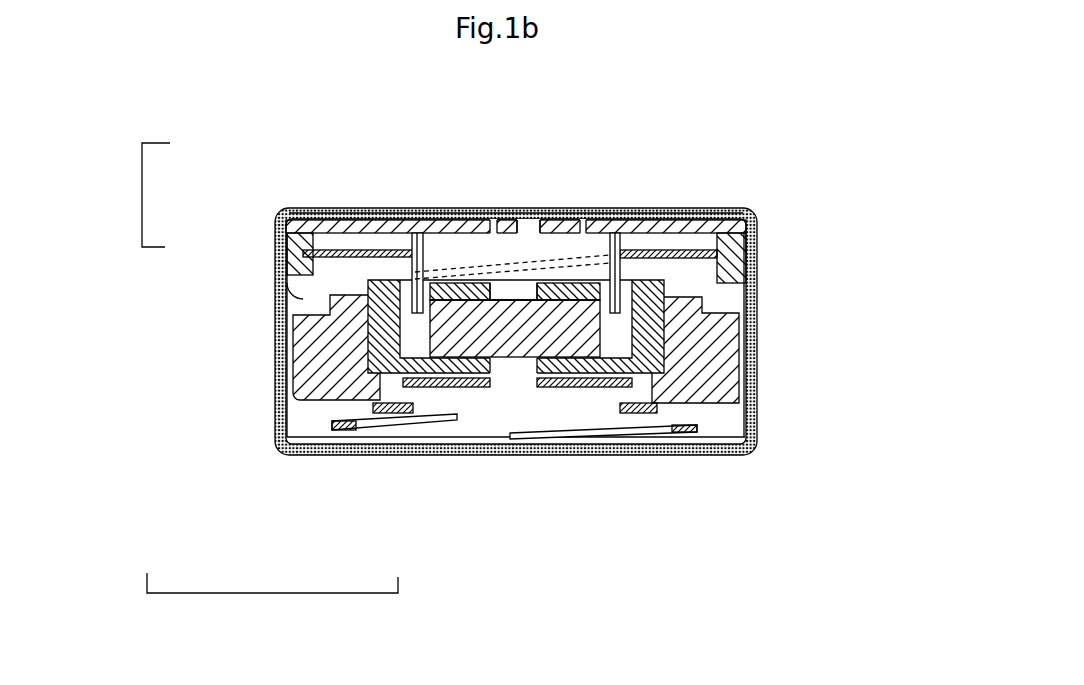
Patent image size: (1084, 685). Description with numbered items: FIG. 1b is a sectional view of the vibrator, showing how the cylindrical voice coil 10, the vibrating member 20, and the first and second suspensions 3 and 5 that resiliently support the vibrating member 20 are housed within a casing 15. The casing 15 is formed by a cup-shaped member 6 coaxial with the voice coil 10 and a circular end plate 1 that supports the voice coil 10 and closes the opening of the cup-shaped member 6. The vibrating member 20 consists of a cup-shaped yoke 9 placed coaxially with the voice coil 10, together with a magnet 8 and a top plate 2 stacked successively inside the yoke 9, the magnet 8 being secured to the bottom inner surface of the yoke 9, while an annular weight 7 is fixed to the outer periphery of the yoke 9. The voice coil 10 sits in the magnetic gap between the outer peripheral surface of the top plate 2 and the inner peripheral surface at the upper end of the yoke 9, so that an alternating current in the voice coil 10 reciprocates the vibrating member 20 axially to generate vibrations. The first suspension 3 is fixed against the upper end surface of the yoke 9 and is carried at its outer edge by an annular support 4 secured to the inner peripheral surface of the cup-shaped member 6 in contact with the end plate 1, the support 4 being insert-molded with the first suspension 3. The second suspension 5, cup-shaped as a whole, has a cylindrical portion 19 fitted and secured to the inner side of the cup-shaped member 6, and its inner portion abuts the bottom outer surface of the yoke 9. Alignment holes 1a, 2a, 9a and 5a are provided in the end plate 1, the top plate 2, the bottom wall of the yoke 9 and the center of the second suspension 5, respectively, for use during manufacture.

The circular end plate 1 is at (333, 210).
The alignment hole 1a is at (517, 230).
The top plate 2 is at (472, 290).
The alignment hole 2a is at (530, 291).
The first suspension 3 is at (743, 210).
The annular support 4 is at (278, 309).
The second suspension 5 is at (563, 365).
The alignment hole 5a is at (522, 372).
The cup-shaped member 6 is at (283, 303).
The annular weight 7 is at (273, 387).
The magnet 8 is at (516, 335).
The cup-shaped yoke 9 is at (293, 360).
The alignment hole 9a is at (540, 386).
The cylindrical voice coil 10 is at (620, 258).
The casing 15 is at (132, 195).
The cylindrical portion 19 is at (755, 302).
The vibrating member 20 is at (272, 604).